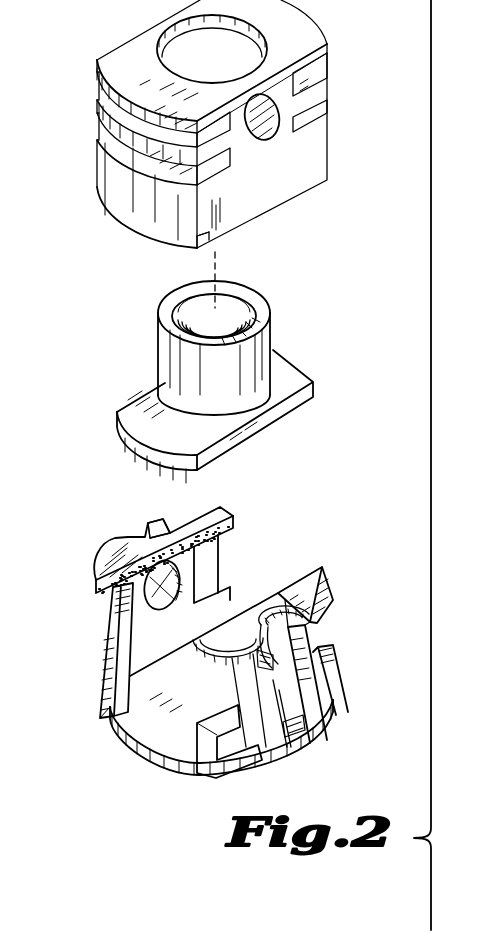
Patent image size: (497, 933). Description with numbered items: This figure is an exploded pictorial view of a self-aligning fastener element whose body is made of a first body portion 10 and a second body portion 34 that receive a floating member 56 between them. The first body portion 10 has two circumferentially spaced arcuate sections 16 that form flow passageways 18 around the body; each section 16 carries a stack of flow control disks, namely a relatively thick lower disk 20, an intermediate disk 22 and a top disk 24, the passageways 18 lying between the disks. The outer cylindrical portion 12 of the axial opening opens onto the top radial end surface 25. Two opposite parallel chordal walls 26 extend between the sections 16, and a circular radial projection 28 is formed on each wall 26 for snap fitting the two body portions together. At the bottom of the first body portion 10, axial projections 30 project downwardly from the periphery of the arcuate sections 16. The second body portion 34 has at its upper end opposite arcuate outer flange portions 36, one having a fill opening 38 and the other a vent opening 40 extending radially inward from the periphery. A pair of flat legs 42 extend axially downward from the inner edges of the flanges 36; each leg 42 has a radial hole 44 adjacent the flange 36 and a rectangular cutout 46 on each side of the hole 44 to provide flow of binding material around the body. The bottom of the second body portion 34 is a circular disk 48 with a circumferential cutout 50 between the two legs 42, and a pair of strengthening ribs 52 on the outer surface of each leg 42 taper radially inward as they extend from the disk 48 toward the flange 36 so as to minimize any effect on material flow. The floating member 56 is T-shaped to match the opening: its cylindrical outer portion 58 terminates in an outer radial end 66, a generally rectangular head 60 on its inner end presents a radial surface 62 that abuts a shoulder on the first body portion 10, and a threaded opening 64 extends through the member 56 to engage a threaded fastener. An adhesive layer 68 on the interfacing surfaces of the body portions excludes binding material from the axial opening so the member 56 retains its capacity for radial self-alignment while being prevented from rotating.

The first body portion 10 is at (103, 44).
The outer portion of axial opening 12 is at (287, 24).
The circumferentially spaced sections 16 is at (123, 228).
The flow passageways 18 is at (93, 137).
The lower flow control disk 20 is at (110, 187).
The intermediate flow control disk 22 is at (332, 88).
The top flow control disk 24 is at (325, 45).
The top radial end surface 25 is at (150, 81).
The chordal walls 26 is at (295, 175).
The circular radial projection 28 is at (280, 117).
The axial projections 30 is at (218, 242).
The second body portion 34 is at (311, 531).
The arcuate outer flange portions 36 is at (210, 508).
The fill opening 38 is at (138, 534).
The vent opening 40 is at (280, 603).
The flat legs 42 is at (123, 620).
The hole 44 is at (163, 603).
The rectangular cutout 46 is at (317, 645).
The circular disk 48 is at (233, 778).
The circumferential cutout 50 is at (107, 723).
The strengthening ribs 52 is at (113, 607).
The floating member 56 is at (321, 310).
The outer portion of floating member 58 is at (180, 350).
The rectangular head 60 is at (118, 427).
The radial surface of head 62 is at (210, 445).
The threaded opening 64 is at (230, 296).
The outer radial end 66 is at (174, 298).
The adhesive layer 68 is at (228, 518).